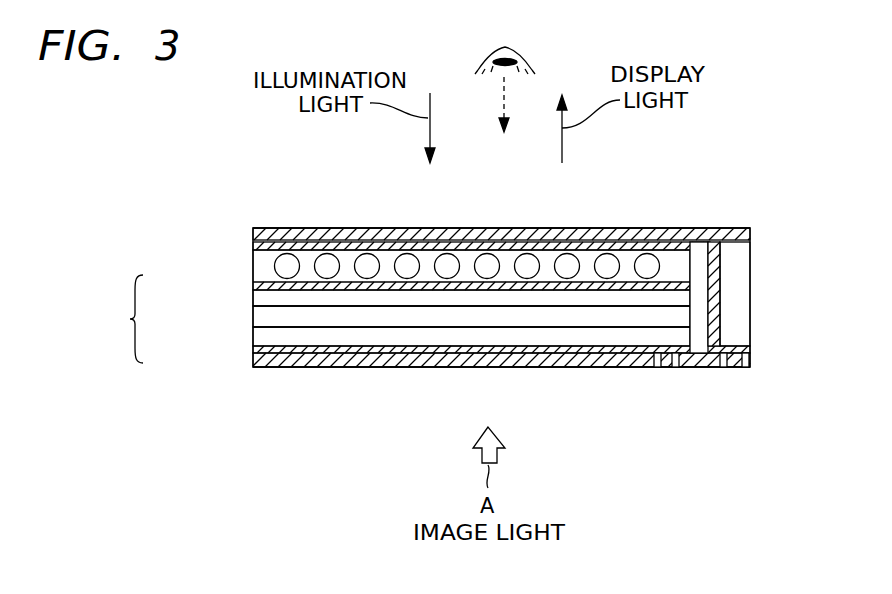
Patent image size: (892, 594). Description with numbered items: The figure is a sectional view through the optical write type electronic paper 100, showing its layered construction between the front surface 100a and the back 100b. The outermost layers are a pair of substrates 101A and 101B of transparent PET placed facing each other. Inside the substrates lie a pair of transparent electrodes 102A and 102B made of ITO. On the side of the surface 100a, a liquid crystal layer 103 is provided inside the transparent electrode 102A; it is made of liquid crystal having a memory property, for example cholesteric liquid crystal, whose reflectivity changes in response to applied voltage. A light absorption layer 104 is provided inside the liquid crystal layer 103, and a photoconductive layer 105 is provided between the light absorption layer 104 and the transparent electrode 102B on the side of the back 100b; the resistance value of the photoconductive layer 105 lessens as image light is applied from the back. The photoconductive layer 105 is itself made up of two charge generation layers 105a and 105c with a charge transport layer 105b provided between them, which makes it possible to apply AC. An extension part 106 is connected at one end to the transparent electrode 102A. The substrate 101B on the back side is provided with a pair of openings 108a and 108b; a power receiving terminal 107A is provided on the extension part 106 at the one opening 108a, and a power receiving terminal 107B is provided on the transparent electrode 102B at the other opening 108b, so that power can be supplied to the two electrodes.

The optical write type electronic paper 100 is at (253, 168).
The surface 100a is at (348, 228).
The back 100b is at (541, 368).
The substrate 101A is at (253, 233).
The transparent electrode 102A is at (253, 246).
The liquid crystal layer 103 is at (255, 268).
The light absorption layer 104 is at (685, 292).
The photoconductive layer 105 is at (387, 319).
The charge generation layer 105a is at (258, 297).
The charge transport layer 105b is at (258, 317).
The charge generation layer 105c is at (258, 335).
The extension part 106 is at (718, 313).
The substrate 101B is at (347, 367).
The transparent electrode 102B is at (273, 355).
The power receiving terminal 107A is at (748, 366).
The power receiving terminal 107B is at (652, 366).
The opening 108a is at (720, 367).
The opening 108b is at (667, 367).